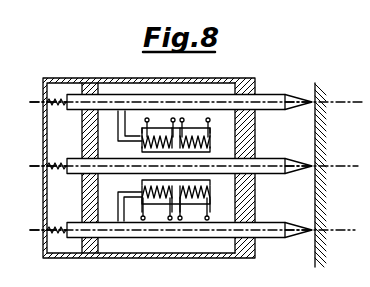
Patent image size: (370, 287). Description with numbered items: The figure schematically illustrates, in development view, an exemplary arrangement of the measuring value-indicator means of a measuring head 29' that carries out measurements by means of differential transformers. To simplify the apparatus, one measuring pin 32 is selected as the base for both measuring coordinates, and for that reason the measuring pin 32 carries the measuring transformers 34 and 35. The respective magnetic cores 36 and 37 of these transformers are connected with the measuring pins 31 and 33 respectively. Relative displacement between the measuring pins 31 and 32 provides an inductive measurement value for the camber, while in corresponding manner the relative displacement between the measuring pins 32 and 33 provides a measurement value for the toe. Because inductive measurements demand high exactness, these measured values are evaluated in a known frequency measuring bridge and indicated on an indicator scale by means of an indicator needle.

The measuring head 29' is at (146, 142).
The measuring pin 31 is at (292, 232).
The measuring pin 32 is at (294, 168).
The measuring pin 33 is at (294, 102).
The measuring transformer 34 is at (192, 207).
The measuring transformer 35 is at (192, 127).
The magnetic core 36 is at (116, 207).
The magnetic core 37 is at (132, 137).